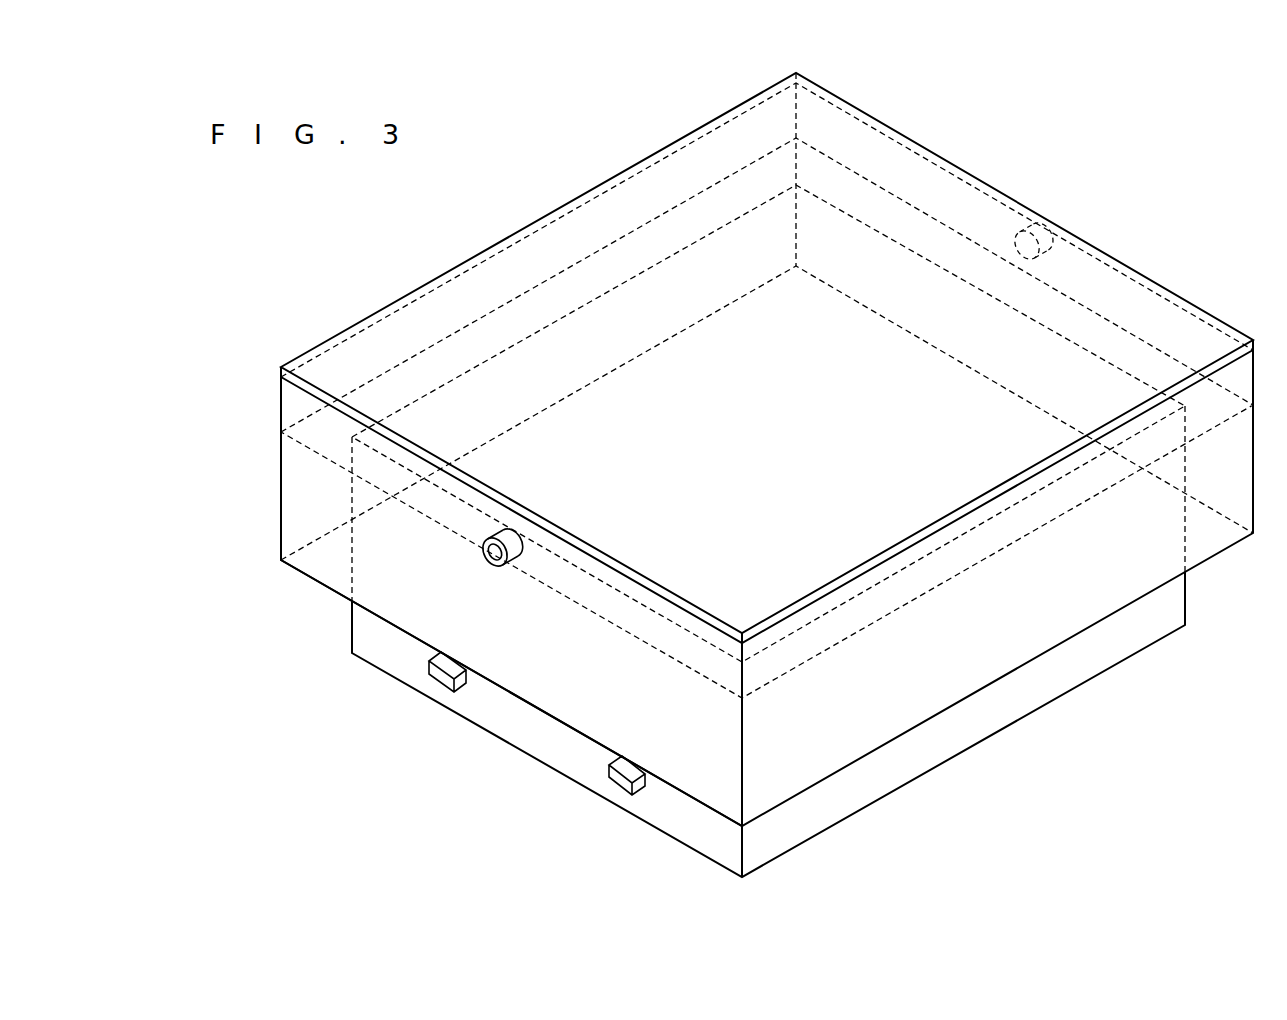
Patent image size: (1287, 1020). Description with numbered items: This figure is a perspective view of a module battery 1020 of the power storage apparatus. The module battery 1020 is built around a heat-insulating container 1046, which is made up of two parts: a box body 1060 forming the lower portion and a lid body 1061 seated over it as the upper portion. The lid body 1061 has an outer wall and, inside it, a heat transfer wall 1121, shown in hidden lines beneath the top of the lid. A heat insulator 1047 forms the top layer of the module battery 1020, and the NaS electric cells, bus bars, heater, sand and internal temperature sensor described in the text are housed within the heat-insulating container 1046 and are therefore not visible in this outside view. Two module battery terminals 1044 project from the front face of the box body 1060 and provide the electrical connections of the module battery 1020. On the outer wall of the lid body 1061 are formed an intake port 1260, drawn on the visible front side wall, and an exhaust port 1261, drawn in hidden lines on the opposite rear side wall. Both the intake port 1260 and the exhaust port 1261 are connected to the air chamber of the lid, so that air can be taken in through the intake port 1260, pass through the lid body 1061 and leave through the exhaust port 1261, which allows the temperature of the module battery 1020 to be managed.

The module battery 1020 is at (1021, 160).
The heat insulator 1047 is at (281, 370).
The heat transfer wall 1121 is at (324, 458).
The heat-insulating container 1046 is at (220, 598).
The lid body 1061 is at (280, 538).
The box body 1060 is at (351, 633).
The module battery terminals 1044 is at (612, 776).
The intake port 1260 is at (516, 562).
The exhaust port 1261 is at (1047, 258).